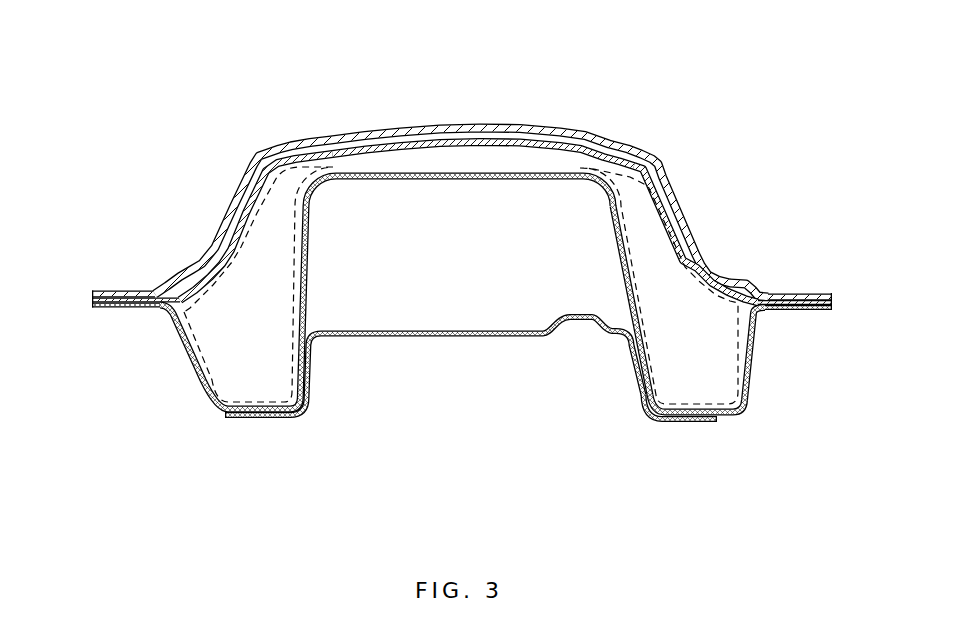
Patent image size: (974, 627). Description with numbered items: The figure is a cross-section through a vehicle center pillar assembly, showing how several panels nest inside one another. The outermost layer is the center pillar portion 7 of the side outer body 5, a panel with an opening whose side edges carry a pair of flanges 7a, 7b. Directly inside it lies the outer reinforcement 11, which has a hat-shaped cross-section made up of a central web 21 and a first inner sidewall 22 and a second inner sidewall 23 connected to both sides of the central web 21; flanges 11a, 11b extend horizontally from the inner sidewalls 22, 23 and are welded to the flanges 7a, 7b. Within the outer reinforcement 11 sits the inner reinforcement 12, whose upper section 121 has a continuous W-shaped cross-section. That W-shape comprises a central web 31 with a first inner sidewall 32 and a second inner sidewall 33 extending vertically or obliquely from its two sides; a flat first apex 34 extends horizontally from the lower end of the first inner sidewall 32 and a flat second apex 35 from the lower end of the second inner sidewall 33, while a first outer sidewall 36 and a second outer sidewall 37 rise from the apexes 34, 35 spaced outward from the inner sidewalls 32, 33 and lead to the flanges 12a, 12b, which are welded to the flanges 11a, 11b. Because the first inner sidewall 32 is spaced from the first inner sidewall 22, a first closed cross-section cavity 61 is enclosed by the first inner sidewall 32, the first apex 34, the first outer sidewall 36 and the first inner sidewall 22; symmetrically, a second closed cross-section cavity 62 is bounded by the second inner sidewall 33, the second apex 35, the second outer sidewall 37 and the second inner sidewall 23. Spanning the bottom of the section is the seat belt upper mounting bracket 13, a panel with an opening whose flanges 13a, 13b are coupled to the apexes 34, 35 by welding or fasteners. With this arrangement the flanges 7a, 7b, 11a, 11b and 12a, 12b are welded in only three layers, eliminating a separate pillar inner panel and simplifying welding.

The side outer body 5 is at (455, 271).
The center pillar portion 7 is at (473, 124).
The flange 7a is at (120, 290).
The flange 7b is at (802, 293).
The outer reinforcement 11 is at (455, 196).
The flange 11a is at (92, 299).
The flange 11b is at (832, 303).
The inner reinforcement 12 is at (462, 298).
The flange 12a is at (108, 308).
The flange 12b is at (806, 310).
The upper section 121 is at (490, 180).
The seat belt upper mounting bracket 13 is at (471, 408).
The flange 13a is at (268, 419).
The flange 13b is at (687, 423).
The central web 21 is at (527, 144).
The first inner sidewall 22 is at (250, 230).
The second inner sidewall 23 is at (673, 228).
The central web 31 is at (428, 180).
The first inner sidewall 32 is at (308, 272).
The second inner sidewall 33 is at (621, 266).
The first apex 34 is at (248, 405).
The second apex 35 is at (694, 409).
The first outer sidewall 36 is at (195, 374).
The second outer sidewall 37 is at (750, 383).
The first closed cross-section cavity 61 is at (250, 305).
The second closed cross-section cavity 62 is at (649, 307).